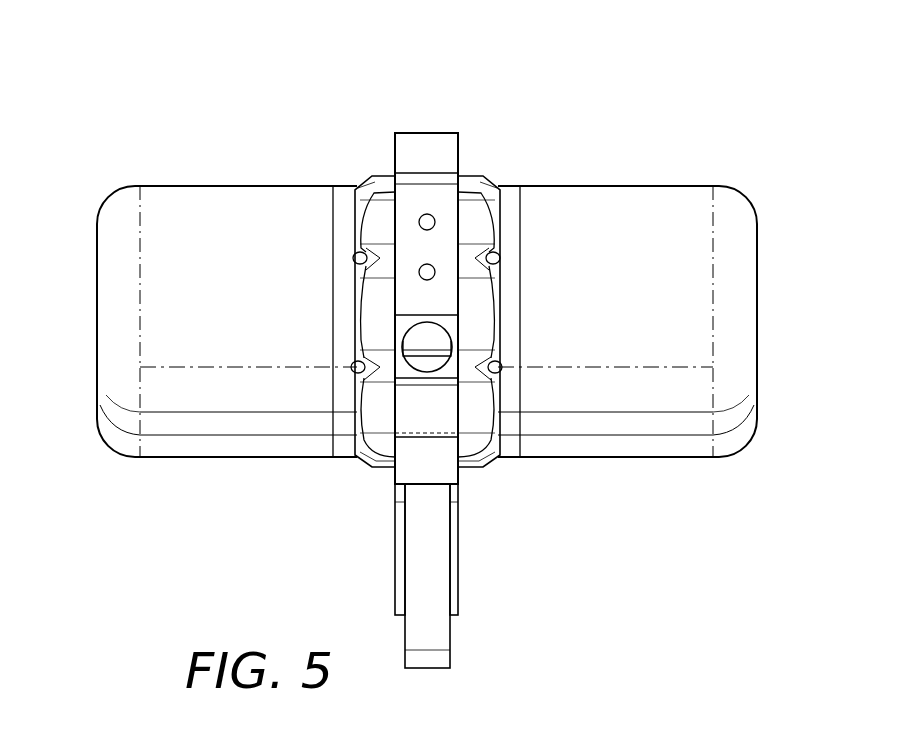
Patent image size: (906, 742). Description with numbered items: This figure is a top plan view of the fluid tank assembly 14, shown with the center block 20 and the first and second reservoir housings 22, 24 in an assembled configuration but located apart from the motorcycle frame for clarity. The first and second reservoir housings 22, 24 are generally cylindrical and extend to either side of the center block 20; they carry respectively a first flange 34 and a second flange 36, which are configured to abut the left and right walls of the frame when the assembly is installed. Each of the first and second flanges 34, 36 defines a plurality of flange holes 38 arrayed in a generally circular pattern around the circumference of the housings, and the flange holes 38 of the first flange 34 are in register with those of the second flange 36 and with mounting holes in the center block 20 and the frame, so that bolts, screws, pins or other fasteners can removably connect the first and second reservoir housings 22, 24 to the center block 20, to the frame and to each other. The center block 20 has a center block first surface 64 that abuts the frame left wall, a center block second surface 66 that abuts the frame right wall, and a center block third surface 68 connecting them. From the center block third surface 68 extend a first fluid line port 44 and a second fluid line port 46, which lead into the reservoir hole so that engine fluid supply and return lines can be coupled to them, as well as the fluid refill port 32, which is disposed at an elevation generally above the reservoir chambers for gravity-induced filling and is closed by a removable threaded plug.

The fluid tank assembly 14 is at (427, 361).
The center block 20 is at (428, 195).
The first reservoir housing 22 is at (121, 328).
The second reservoir housing 24 is at (735, 347).
The fluid refill port 32 is at (486, 347).
The first flange 34 is at (378, 415).
The second flange 36 is at (495, 361).
The flange holes 38 is at (356, 260).
The first fluid line port 44 is at (500, 285).
The second fluid line port 46 is at (493, 216).
The center block first surface 64 is at (393, 573).
The center block second surface 66 is at (457, 583).
The center block third surface 68 is at (432, 552).